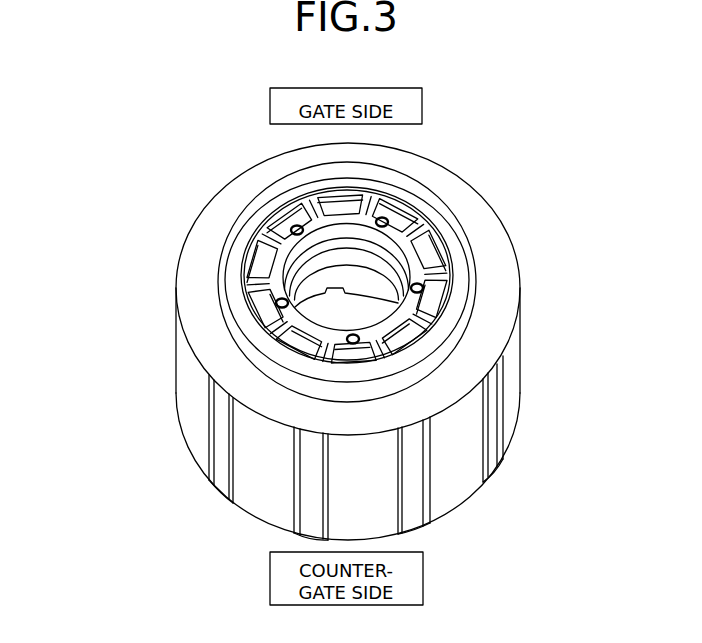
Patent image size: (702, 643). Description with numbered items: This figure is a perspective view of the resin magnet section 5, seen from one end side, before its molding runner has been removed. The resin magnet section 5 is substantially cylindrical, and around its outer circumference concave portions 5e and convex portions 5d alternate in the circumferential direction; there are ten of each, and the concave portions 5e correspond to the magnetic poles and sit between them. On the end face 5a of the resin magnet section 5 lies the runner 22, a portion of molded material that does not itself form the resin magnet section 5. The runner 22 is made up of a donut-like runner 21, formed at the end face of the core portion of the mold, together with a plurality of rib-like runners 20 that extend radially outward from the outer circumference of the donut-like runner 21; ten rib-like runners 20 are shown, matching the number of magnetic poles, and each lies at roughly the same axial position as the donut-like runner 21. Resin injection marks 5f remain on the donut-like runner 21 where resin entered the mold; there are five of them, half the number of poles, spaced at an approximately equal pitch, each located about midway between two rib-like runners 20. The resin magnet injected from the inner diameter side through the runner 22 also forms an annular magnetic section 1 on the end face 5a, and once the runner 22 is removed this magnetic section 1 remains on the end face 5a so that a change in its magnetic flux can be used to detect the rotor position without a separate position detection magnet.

The magnetic section 1 is at (457, 237).
The resin magnet section 5 is at (452, 136).
The end face 5a is at (470, 210).
The convex portions 5d is at (465, 438).
The concave portions 5e is at (413, 483).
The resin injection marks 5f is at (295, 221).
The rib-like runners 20 is at (260, 285).
The donut-like runner 21 is at (300, 347).
The runner 22 is at (231, 327).